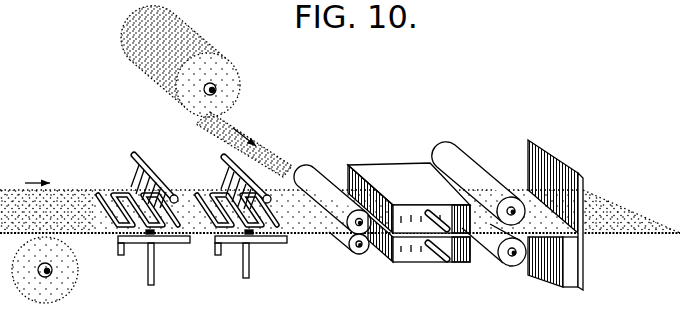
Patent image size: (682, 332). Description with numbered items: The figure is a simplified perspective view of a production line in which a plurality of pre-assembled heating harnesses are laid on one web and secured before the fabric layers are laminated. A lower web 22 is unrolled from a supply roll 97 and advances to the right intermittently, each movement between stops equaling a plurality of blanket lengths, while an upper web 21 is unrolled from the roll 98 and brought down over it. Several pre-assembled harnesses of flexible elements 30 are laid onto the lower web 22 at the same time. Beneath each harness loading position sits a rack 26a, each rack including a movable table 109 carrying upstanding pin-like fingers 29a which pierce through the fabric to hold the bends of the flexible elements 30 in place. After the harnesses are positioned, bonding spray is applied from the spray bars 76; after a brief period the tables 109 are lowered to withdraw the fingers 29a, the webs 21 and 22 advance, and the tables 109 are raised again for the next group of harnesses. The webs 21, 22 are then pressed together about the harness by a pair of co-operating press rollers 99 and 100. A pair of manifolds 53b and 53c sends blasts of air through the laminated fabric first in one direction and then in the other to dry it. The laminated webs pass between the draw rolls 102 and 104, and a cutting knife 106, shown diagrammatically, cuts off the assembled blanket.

The lower web 22 is at (62, 190).
The supply roll 97 is at (37, 293).
The roll 98 is at (238, 80).
The upper web 21 is at (249, 144).
The pin-like fingers 29a is at (108, 193).
The flexible elements 30 is at (213, 193).
The movable table 109 is at (157, 243).
The rack 26a is at (142, 258).
The spray bars 76 is at (143, 136).
The press roller 99 is at (330, 178).
The press roller 100 is at (350, 248).
The manifold 53b is at (396, 170).
The manifold 53c is at (410, 263).
The draw roll 102 is at (478, 166).
The draw roll 104 is at (497, 268).
The cutting knife 106 is at (578, 159).